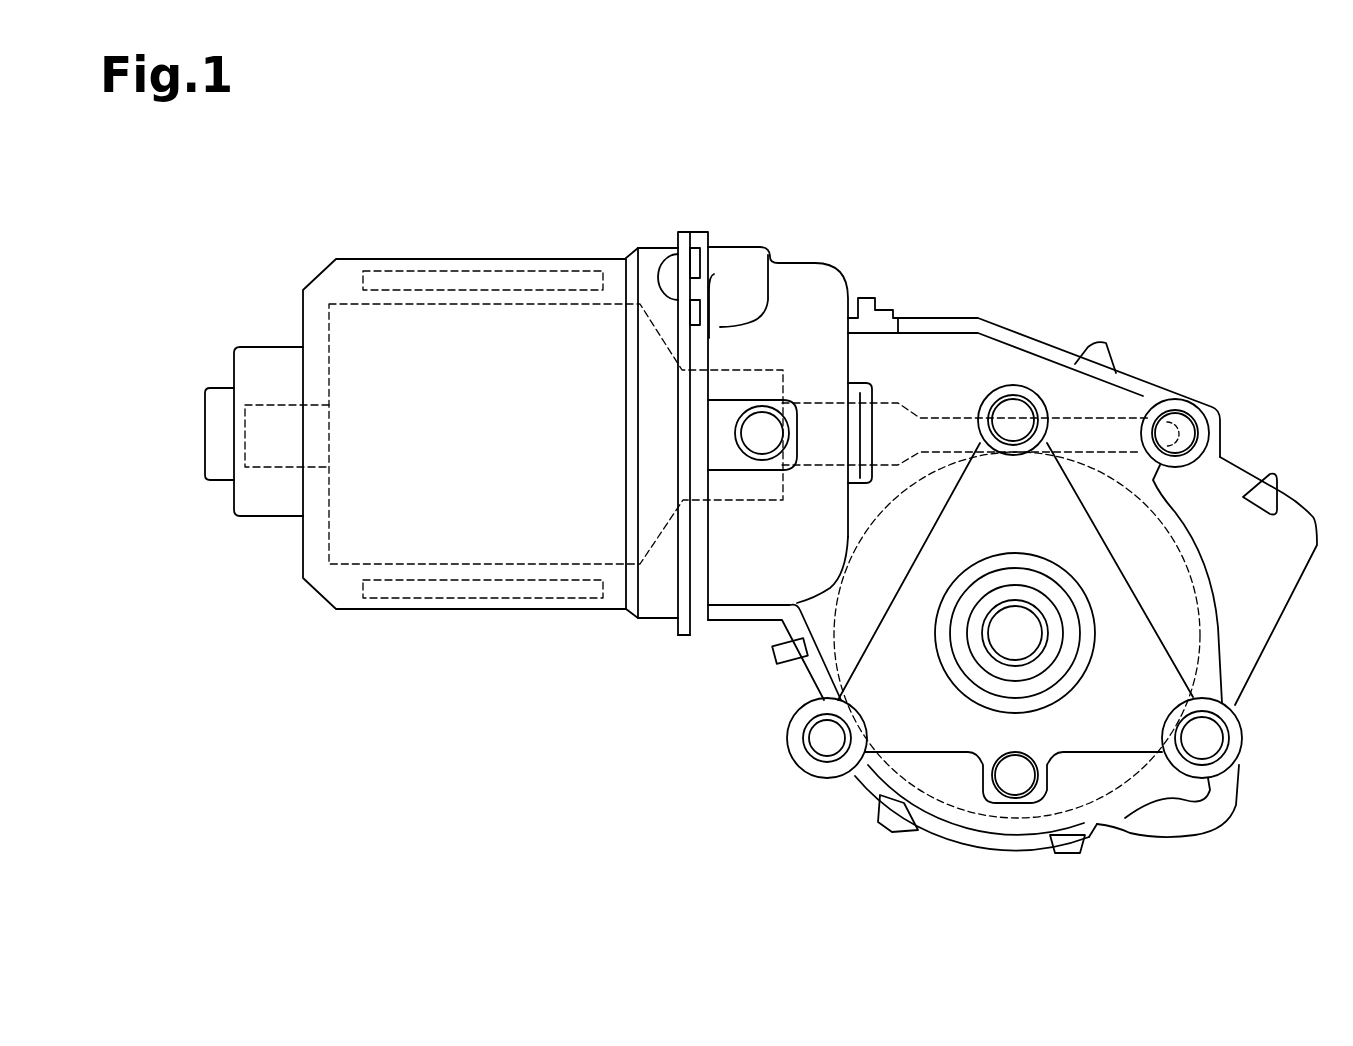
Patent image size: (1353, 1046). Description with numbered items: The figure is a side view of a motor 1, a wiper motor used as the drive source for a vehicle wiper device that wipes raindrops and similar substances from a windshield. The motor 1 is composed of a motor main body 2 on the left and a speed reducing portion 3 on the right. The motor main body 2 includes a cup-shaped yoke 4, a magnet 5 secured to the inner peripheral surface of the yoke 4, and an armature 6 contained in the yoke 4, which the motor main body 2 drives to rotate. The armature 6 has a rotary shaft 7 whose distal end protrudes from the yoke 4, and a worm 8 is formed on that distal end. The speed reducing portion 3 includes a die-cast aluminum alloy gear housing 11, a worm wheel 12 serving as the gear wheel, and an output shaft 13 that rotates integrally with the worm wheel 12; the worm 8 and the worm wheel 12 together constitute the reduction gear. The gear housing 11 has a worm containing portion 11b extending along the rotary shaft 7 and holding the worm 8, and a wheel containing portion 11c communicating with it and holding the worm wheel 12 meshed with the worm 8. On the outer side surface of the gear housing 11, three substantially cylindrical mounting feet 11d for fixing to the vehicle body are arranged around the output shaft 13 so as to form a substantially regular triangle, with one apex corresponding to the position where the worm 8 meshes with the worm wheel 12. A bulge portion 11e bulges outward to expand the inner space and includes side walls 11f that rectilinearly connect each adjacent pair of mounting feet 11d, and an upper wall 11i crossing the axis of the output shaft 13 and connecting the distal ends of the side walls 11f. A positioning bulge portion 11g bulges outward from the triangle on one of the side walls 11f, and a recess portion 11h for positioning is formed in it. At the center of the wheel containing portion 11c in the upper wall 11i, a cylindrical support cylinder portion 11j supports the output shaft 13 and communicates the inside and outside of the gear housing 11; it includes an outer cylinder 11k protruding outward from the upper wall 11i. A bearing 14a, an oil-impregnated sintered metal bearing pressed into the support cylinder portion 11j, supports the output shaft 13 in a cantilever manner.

The motor 1 is at (625, 160).
The motor main body 2 is at (610, 234).
The speed reducing portion 3 is at (738, 223).
The yoke 4 is at (423, 609).
The magnet 5 is at (486, 271).
The armature 6 is at (407, 303).
The rotary shaft 7 is at (286, 475).
The worm 8 is at (1073, 415).
The gear housing 11 is at (948, 340).
The worm containing portion 11b is at (1098, 388).
The wheel containing portion 11c is at (937, 792).
The mounting feet 11d is at (1003, 380).
The bulge portion 11e is at (928, 557).
The side walls 11f is at (876, 618).
The positioning bulge portion 11g is at (1013, 817).
The recess portion 11h is at (1023, 767).
The upper wall 11i is at (1140, 618).
The support cylinder portion 11j is at (967, 638).
The outer cylinder 11k is at (1038, 572).
The worm wheel 12 is at (1183, 553).
The output shaft 13 is at (1013, 615).
The bearing 14a is at (993, 670).